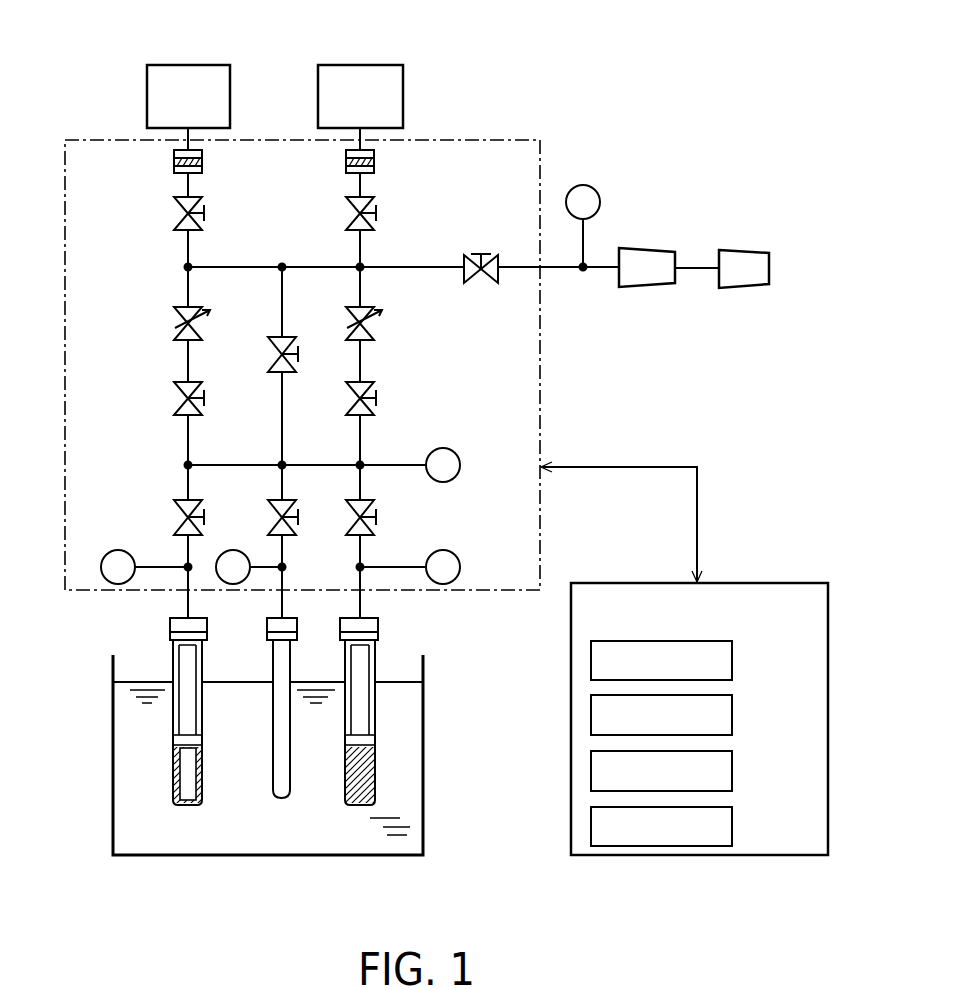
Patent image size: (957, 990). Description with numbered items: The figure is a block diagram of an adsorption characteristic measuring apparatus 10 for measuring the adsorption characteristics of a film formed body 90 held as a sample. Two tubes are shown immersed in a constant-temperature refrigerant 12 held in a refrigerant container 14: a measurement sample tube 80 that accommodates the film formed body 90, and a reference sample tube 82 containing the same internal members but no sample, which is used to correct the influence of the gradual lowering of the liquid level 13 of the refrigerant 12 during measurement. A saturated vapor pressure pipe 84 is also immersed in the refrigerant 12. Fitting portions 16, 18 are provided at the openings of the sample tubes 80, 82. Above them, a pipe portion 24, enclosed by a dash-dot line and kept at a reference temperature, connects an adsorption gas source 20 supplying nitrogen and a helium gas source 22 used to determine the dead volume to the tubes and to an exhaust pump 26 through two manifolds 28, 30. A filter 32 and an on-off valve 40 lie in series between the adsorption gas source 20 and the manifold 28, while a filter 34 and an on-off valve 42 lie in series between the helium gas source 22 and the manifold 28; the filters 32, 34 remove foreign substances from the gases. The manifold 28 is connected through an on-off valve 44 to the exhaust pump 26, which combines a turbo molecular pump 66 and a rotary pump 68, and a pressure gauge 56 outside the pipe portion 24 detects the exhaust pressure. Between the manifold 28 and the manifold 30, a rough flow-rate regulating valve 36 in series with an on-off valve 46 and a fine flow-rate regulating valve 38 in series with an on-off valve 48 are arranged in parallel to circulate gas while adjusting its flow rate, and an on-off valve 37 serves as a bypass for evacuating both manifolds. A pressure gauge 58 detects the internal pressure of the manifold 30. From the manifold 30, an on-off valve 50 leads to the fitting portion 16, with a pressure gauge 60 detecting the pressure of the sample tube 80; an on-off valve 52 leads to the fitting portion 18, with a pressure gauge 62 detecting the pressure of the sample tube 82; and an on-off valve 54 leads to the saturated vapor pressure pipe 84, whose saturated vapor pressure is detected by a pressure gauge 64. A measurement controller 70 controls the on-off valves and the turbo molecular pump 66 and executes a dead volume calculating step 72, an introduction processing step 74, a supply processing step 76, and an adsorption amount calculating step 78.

The adsorption characteristic measuring apparatus 10 is at (684, 142).
The refrigerant 12 is at (130, 752).
The liquid level 13 is at (145, 671).
The refrigerant container 14 is at (113, 830).
The fitting portion 16 is at (170, 628).
The fitting portion 18 is at (378, 625).
The adsorption gas source 20 is at (356, 65).
The helium gas source 22 is at (184, 65).
The pipe portion 24 is at (540, 372).
The exhaust pump 26 is at (767, 207).
The manifold 28 is at (229, 265).
The manifold 30 is at (229, 463).
The filter 32 is at (374, 162).
The filter 34 is at (174, 160).
The flow-rate regulating valve 36 is at (164, 327).
The on-off valve 37 is at (309, 365).
The flow-rate regulating valve 38 is at (386, 332).
The on-off valve 40 is at (388, 217).
The on-off valve 42 is at (164, 217).
The on-off valve 44 is at (490, 290).
The on-off valve 46 is at (164, 402).
The on-off valve 48 is at (389, 402).
The on-off valve 50 is at (173, 521).
The on-off valve 52 is at (389, 521).
The on-off valve 54 is at (305, 538).
The pressure gauge 56 is at (572, 190).
The pressure gauge 58 is at (456, 452).
The pressure gauge 60 is at (121, 550).
The pressure gauge 62 is at (455, 554).
The pressure gauge 64 is at (236, 550).
The turbo molecular pump 66 is at (656, 248).
The rotary pump 68 is at (744, 249).
The measurement controller 70 is at (828, 705).
The dead volume calculating step 72 is at (732, 660).
The introduction processing step 74 is at (732, 717).
The supply processing step 76 is at (732, 768).
The adsorption amount calculating step 78 is at (732, 820).
The sample tube 80 is at (213, 726).
The sample tube 82 is at (387, 715).
The saturated vapor pressure pipe 84 is at (284, 790).
The film formed body 90 is at (190, 793).